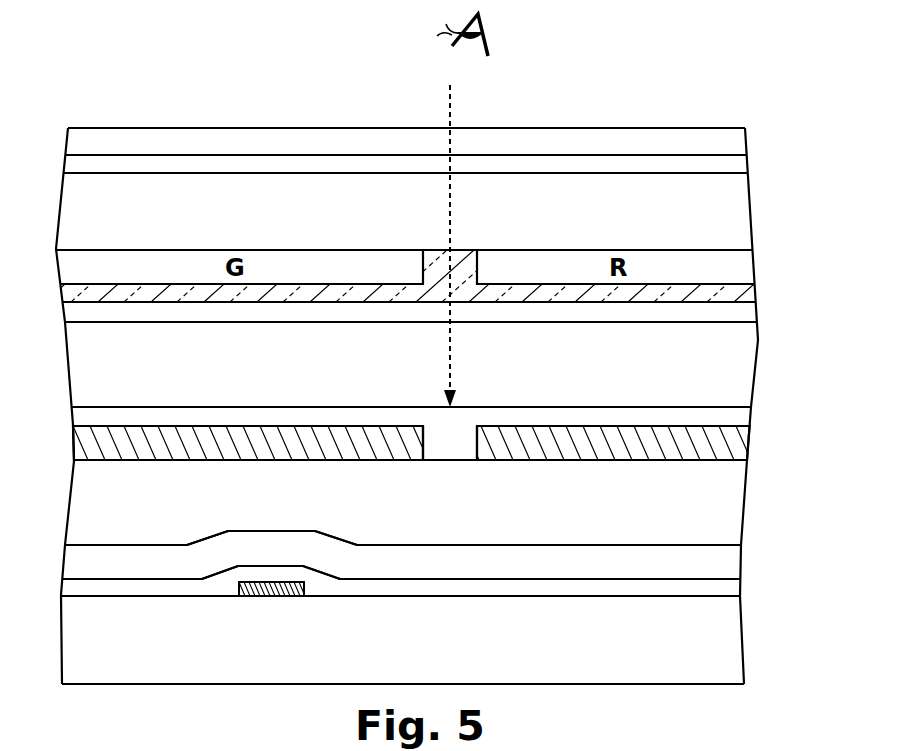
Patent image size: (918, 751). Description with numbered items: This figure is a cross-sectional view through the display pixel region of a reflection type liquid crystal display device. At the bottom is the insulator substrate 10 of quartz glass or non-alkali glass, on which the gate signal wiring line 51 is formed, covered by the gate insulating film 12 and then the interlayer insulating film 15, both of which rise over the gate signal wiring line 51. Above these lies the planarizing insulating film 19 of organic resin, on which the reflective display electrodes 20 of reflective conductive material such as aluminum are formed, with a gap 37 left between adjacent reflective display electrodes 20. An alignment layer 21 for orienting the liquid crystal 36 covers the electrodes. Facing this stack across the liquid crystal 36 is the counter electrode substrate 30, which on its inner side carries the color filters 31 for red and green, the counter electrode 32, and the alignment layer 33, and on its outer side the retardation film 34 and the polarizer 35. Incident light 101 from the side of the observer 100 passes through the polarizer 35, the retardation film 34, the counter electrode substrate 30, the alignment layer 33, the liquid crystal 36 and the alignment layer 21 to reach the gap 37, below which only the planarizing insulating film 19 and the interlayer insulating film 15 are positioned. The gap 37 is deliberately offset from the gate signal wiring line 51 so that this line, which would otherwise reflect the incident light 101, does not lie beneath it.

The insulator substrate 10 is at (732, 616).
The gate insulating film 12 is at (732, 588).
The interlayer insulating film 15 is at (730, 561).
The planarizing insulating film 19 is at (735, 503).
The reflective display electrode 20 is at (745, 441).
The alignment layer 21 is at (742, 416).
The counter electrode substrate 30 is at (745, 216).
The color filters 31 is at (748, 272).
The counter electrode 32 is at (750, 296).
The alignment layer 33 is at (750, 316).
The retardation film 34 is at (740, 168).
The polarizer 35 is at (737, 145).
The liquid crystal 36 is at (745, 366).
The gap 37 is at (457, 437).
The gate signal wiring line 51 is at (268, 590).
The observer 100 is at (483, 22).
The incident light 101 is at (449, 100).